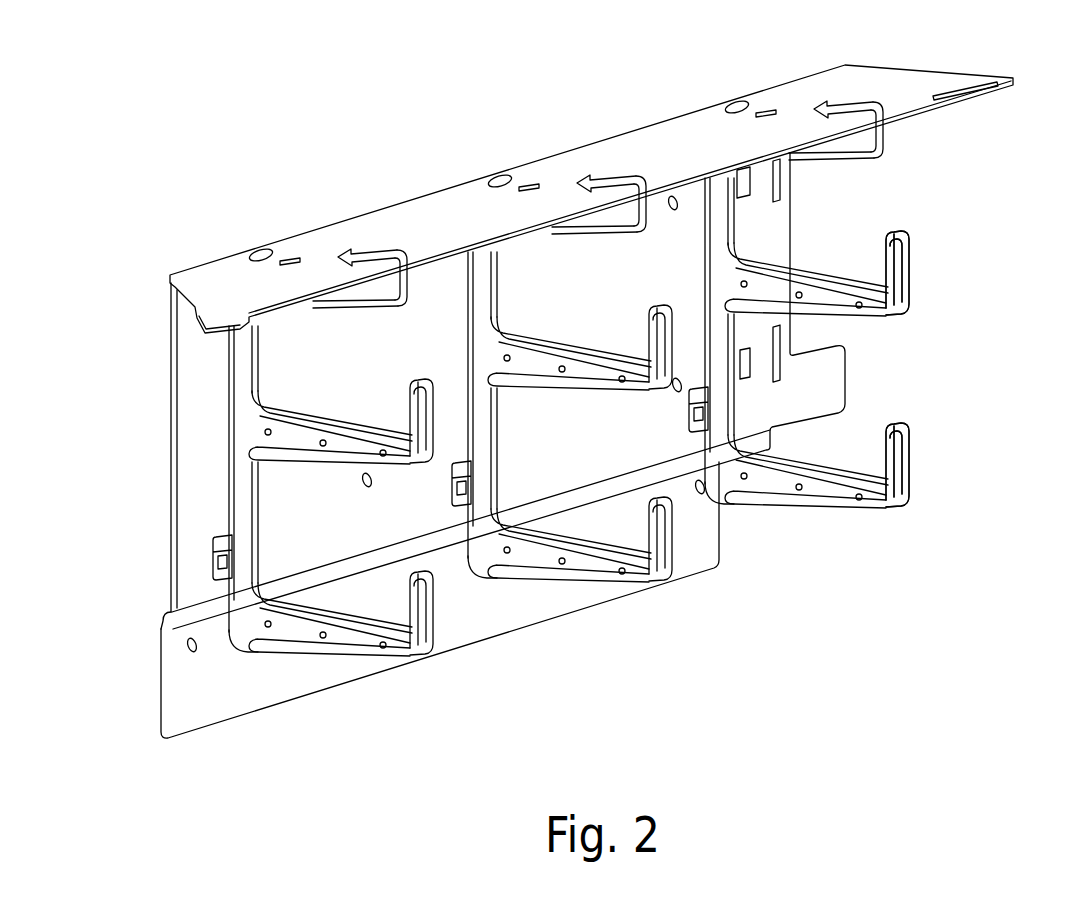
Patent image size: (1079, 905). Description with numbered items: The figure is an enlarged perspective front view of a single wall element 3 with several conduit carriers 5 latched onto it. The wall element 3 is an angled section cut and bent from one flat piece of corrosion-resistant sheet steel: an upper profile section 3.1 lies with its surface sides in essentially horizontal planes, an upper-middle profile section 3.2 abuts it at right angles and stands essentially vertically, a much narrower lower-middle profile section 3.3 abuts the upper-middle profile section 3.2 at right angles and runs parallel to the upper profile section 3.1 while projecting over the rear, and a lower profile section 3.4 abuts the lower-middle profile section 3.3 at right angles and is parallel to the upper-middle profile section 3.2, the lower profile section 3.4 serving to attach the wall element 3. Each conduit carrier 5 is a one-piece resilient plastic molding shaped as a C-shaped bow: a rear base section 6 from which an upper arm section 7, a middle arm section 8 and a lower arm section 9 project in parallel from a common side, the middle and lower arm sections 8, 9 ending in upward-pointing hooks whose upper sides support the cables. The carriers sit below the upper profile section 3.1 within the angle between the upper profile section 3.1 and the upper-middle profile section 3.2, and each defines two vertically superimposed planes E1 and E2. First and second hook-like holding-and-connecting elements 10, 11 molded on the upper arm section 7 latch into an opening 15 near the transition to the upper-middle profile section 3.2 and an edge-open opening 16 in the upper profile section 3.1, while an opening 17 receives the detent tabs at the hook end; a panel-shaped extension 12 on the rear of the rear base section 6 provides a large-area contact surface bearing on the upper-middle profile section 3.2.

The wall element 3 is at (550, 382).
The upper profile section 3.1 is at (655, 137).
The upper-middle profile section 3.2 is at (190, 440).
The lower-middle profile section 3.3 is at (168, 617).
The lower profile section 3.4 is at (200, 685).
The conduit carrier 5 is at (558, 382).
The rear base section 6 is at (232, 378).
The upper arm section 7 is at (383, 308).
The middle arm section 8 is at (291, 640).
The lower arm section 9 is at (337, 443).
The first holding-and-connecting element 10 is at (258, 250).
The second holding-and-connecting element 11 is at (368, 262).
The panel-shaped extension 12 is at (213, 547).
The opening for first connecting element 15 is at (287, 258).
The edge-open opening for second connecting element 16 is at (897, 120).
The opening for detent tabs at hook end 17 is at (827, 122).
The plane E1 is at (908, 298).
The plane E2 is at (905, 482).